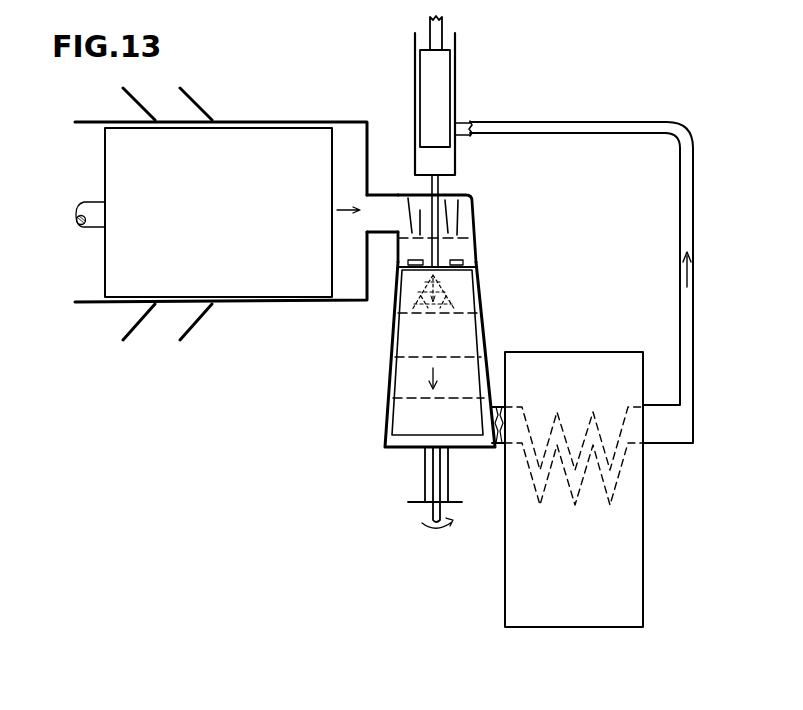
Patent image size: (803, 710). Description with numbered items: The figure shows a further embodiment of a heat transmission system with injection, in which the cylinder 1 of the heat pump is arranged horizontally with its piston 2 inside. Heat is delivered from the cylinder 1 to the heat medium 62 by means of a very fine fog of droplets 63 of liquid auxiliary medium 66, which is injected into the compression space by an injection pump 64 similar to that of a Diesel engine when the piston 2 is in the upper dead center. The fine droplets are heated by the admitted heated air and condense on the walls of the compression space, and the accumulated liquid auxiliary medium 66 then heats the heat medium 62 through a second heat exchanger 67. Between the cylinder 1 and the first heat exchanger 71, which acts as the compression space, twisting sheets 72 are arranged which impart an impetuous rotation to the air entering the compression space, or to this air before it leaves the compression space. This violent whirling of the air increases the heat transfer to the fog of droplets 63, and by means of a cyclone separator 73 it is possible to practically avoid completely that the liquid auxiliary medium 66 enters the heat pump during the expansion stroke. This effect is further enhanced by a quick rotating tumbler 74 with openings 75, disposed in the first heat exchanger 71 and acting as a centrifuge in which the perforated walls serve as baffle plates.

The cylinder 1 is at (283, 122).
The piston 2 is at (224, 230).
The heat medium 62 is at (630, 568).
The fog of droplets 63 is at (448, 300).
The cylinder 64 is at (440, 75).
The liquid auxiliary medium 66 is at (498, 407).
The second heat exchanger 67 is at (542, 507).
The first heat exchanger 71 is at (382, 368).
The twisting sheets 72 is at (466, 255).
The cyclone separator 73 is at (478, 207).
The tumbler 74 is at (398, 330).
The openings 75 is at (405, 402).